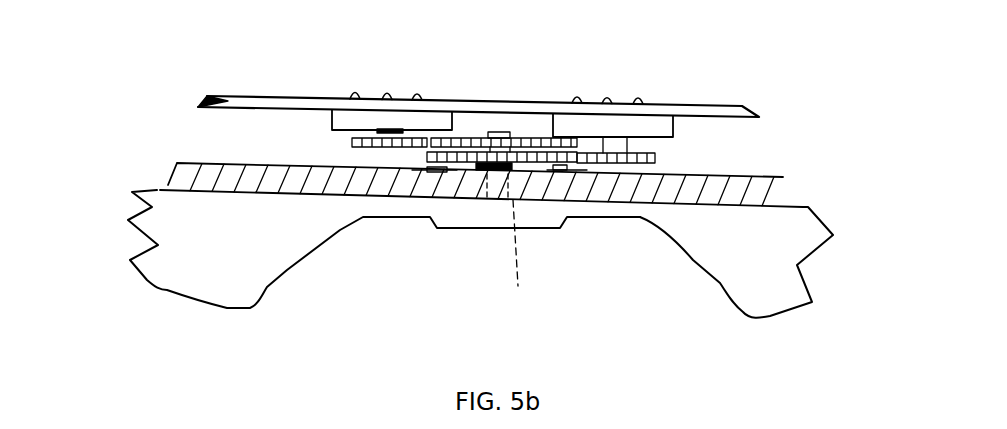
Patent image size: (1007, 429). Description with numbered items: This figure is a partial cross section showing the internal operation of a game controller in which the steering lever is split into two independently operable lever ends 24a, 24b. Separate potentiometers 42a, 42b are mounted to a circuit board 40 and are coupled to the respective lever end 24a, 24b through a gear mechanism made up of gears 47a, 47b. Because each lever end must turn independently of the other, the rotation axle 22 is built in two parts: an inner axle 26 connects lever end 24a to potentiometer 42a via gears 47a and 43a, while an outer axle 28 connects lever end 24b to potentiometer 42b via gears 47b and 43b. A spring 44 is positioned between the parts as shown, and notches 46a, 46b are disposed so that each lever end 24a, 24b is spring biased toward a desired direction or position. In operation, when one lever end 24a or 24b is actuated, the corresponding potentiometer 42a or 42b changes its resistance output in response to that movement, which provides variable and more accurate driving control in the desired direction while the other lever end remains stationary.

The rotation axle 22 is at (490, 197).
The lever end 24a is at (247, 262).
The lever end 24b is at (750, 302).
The inner axle 26 is at (495, 132).
The outer axle 28 is at (467, 173).
The circuit board 40 is at (693, 110).
The potentiometer 42a is at (417, 118).
The potentiometer 42b is at (587, 128).
The gear 43a is at (352, 143).
The gear 43b is at (655, 155).
The spring 44 is at (572, 178).
The notch 46a is at (567, 170).
The notch 46b is at (435, 172).
The gear 47a is at (537, 142).
The gear 47b is at (427, 157).